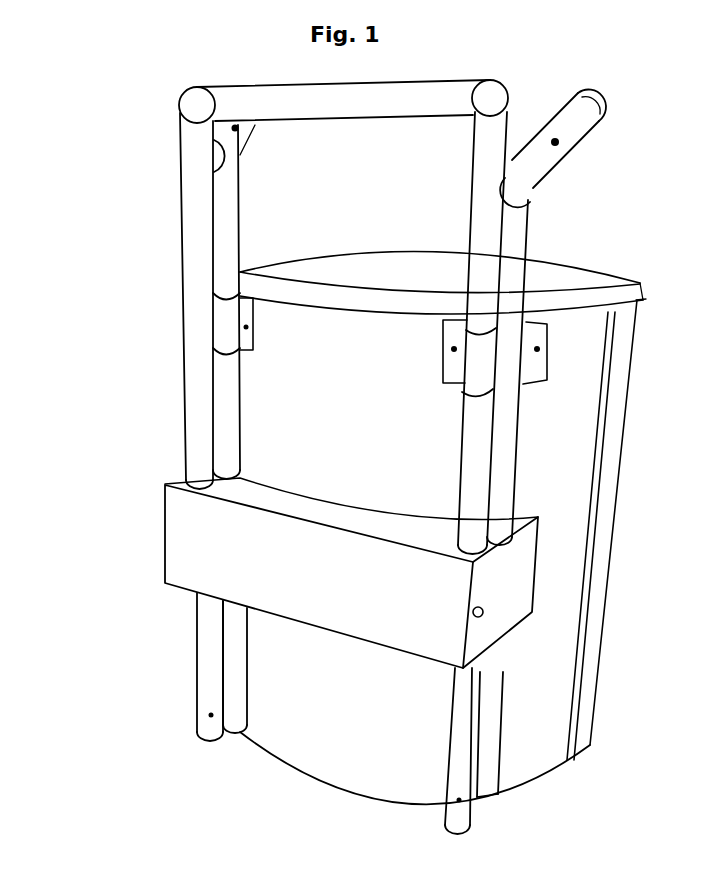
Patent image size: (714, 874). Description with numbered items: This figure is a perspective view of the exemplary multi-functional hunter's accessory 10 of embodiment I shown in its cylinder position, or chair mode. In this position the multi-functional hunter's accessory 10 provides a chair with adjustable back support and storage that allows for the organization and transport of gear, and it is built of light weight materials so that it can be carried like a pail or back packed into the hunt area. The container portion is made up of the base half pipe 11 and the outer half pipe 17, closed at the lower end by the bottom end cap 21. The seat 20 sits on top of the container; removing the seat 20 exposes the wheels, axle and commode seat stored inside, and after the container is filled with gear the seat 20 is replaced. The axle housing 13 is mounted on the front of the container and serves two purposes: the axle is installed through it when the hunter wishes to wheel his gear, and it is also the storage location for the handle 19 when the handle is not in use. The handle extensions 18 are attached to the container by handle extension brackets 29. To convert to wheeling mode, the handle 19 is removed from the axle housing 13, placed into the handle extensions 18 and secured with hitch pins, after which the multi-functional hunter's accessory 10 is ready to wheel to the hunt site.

The multi-functional hunter's accessory 10 is at (112, 644).
The base half pipe 11 is at (316, 778).
The axle housing 13 is at (164, 523).
The outer half pipe 17 is at (597, 672).
The handle extension 18 is at (598, 103).
The handle 19 is at (178, 188).
The seat 20 is at (588, 268).
The bottom end cap 21 is at (536, 783).
The handle extension bracket 29 is at (213, 325).